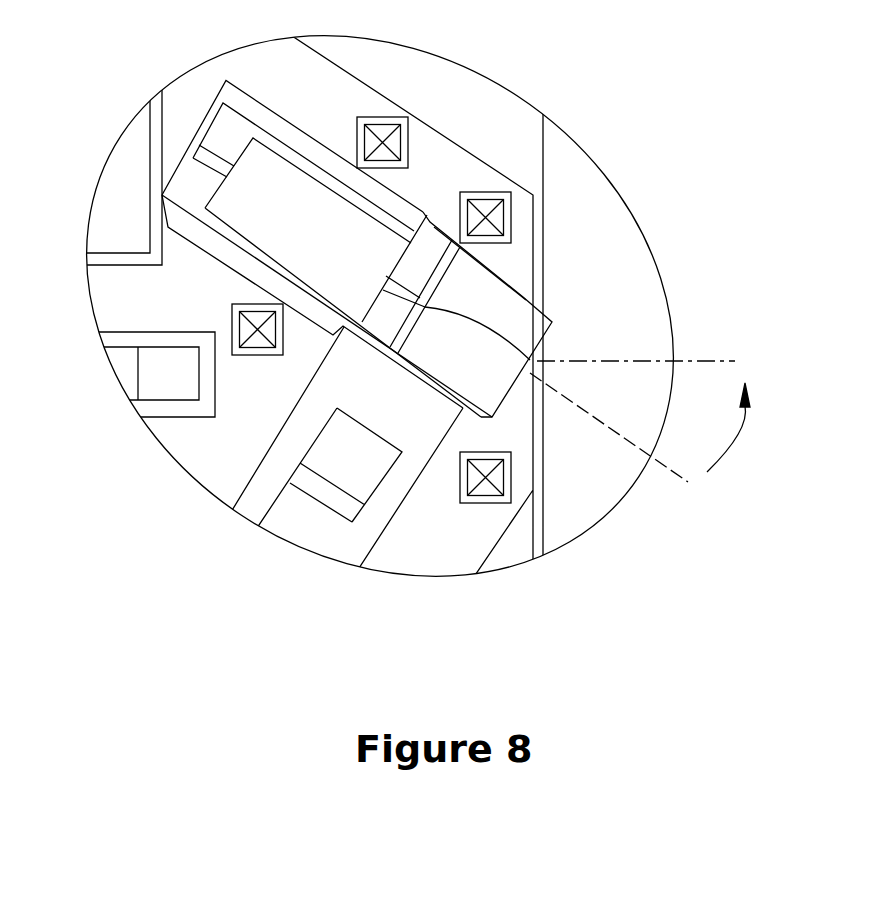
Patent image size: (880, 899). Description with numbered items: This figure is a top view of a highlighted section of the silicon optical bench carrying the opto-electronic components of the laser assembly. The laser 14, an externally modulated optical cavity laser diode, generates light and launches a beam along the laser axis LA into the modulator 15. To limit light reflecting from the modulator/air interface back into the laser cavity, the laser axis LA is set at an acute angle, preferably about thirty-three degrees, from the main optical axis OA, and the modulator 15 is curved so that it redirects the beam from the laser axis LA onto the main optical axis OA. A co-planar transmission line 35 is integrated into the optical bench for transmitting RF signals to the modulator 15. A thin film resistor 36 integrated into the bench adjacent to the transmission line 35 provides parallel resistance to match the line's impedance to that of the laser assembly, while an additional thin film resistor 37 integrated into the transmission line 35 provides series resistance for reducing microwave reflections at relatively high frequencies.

The laser 14 is at (243, 215).
The modulator 15 is at (517, 331).
The co-planar transmission line 35 is at (307, 528).
The thin film resistor 36 is at (127, 367).
The additional thin film resistor 37 is at (300, 465).
The main optical axis OA is at (658, 360).
The laser axis LA is at (624, 444).